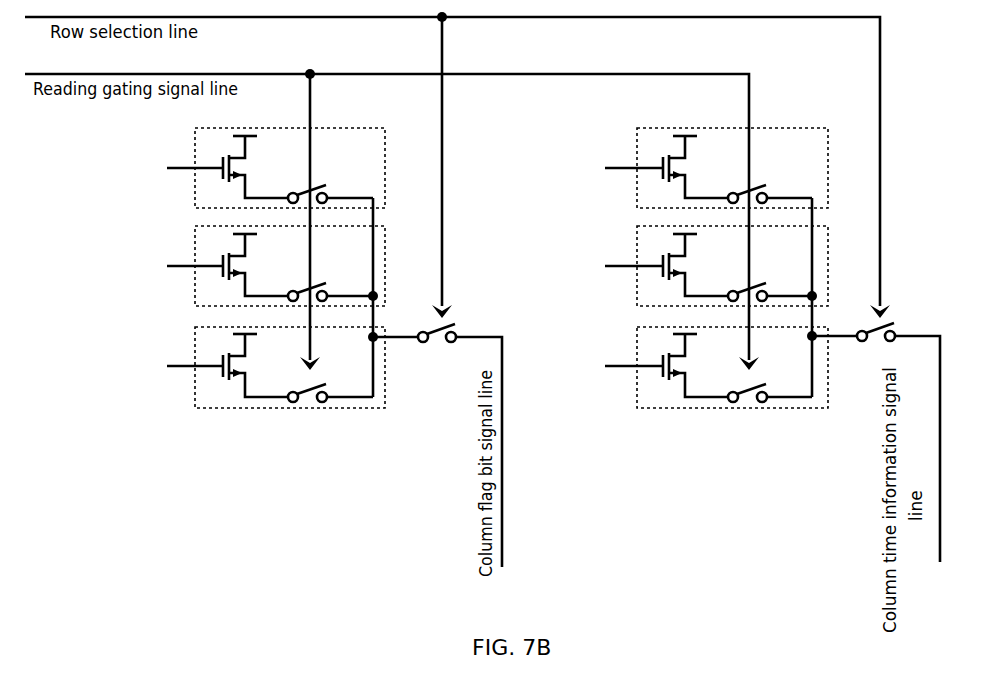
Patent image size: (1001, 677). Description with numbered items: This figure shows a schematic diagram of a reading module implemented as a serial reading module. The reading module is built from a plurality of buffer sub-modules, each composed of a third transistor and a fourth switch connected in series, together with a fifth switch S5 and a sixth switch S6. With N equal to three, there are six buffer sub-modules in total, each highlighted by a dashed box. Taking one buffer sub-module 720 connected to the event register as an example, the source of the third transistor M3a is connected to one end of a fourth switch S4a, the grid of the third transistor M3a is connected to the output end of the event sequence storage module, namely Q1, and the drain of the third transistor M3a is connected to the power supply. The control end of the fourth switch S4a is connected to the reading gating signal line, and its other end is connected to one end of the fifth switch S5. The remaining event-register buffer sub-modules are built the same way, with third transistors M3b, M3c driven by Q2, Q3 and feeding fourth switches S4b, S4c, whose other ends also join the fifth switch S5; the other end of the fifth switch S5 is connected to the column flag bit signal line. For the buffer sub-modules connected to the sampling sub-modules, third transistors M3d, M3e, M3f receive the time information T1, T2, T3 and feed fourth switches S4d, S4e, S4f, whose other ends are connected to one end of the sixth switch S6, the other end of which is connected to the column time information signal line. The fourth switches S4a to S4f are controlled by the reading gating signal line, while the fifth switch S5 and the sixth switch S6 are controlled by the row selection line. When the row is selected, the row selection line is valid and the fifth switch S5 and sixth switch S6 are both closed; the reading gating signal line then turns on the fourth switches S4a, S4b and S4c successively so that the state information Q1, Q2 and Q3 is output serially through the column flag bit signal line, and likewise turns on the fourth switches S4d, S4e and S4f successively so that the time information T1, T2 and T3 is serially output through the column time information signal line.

The buffer sub-module 720 is at (396, 141).
The third transistor M3a is at (255, 167).
The third transistor M3b is at (255, 265).
The third transistor M3c is at (255, 365).
The third transistor M3d is at (697, 167).
The third transistor M3e is at (697, 265).
The third transistor M3f is at (695, 365).
The fourth switch S4a is at (330, 186).
The fourth switch S4b is at (330, 284).
The fourth switch S4c is at (330, 384).
The fourth switch S4d is at (770, 186).
The fourth switch S4e is at (770, 284).
The fourth switch S4f is at (770, 384).
The fifth switch S5 is at (437, 445).
The sixth switch S6 is at (876, 442).
The state information Q1 is at (180, 168).
The state information Q2 is at (180, 266).
The state information Q3 is at (180, 366).
The time information T1 is at (620, 168).
The time information T2 is at (620, 266).
The time information T3 is at (620, 366).